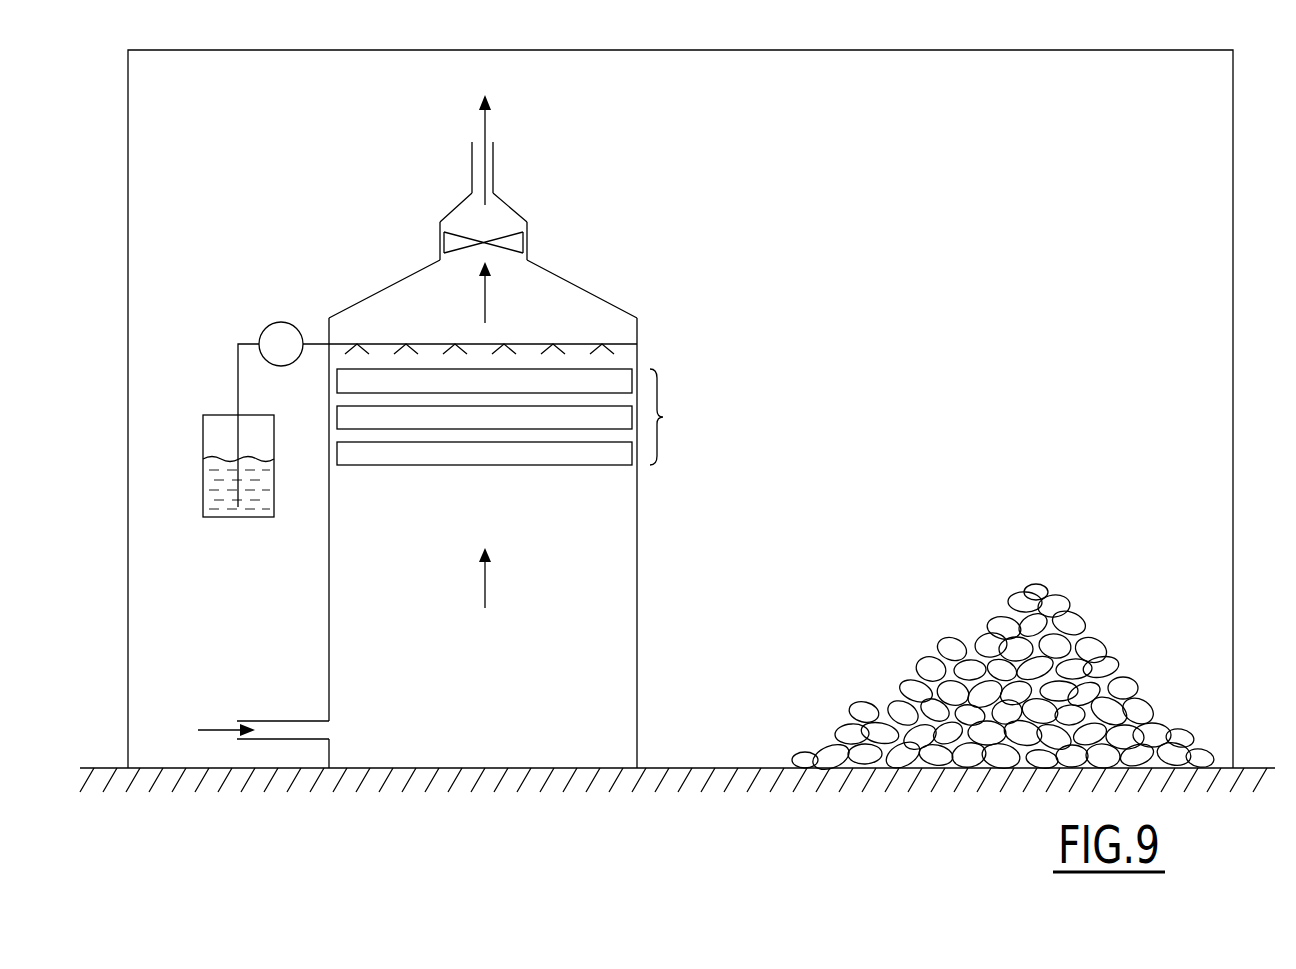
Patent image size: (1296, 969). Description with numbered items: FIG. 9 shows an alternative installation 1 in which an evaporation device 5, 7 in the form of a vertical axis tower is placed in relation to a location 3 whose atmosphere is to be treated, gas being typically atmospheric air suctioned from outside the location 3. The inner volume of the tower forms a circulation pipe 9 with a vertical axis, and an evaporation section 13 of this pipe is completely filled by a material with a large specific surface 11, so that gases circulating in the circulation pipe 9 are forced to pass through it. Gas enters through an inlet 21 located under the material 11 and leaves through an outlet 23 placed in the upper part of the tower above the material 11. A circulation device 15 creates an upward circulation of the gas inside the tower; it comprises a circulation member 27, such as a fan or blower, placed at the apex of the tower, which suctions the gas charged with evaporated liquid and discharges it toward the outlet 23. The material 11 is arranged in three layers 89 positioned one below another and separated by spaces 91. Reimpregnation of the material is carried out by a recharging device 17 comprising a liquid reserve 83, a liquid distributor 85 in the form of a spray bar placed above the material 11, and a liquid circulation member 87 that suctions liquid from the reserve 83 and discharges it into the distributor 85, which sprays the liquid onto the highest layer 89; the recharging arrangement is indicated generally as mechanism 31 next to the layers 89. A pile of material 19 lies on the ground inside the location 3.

The installation 1 is at (220, 131).
The location 3 is at (1233, 185).
The evaporation device 5 is at (338, 252).
The evaporation device 7 is at (662, 308).
The circulation pipe 9 is at (630, 640).
The material with a large specific surface 11 is at (512, 417).
The evaporation section 13 is at (330, 393).
The circulation device 15 is at (556, 236).
The recharging device 17 is at (218, 319).
The pile of material 19 is at (1048, 588).
The inlet 21 is at (309, 729).
The outlet 23 is at (472, 173).
The circulation member 27 is at (448, 243).
The mechanism 31 is at (720, 403).
The liquid reserve 83 is at (203, 431).
The liquid distributor 85 is at (545, 344).
The liquid circulation member 87 is at (275, 322).
The layers 89 is at (490, 378).
The spaces 91 is at (588, 434).